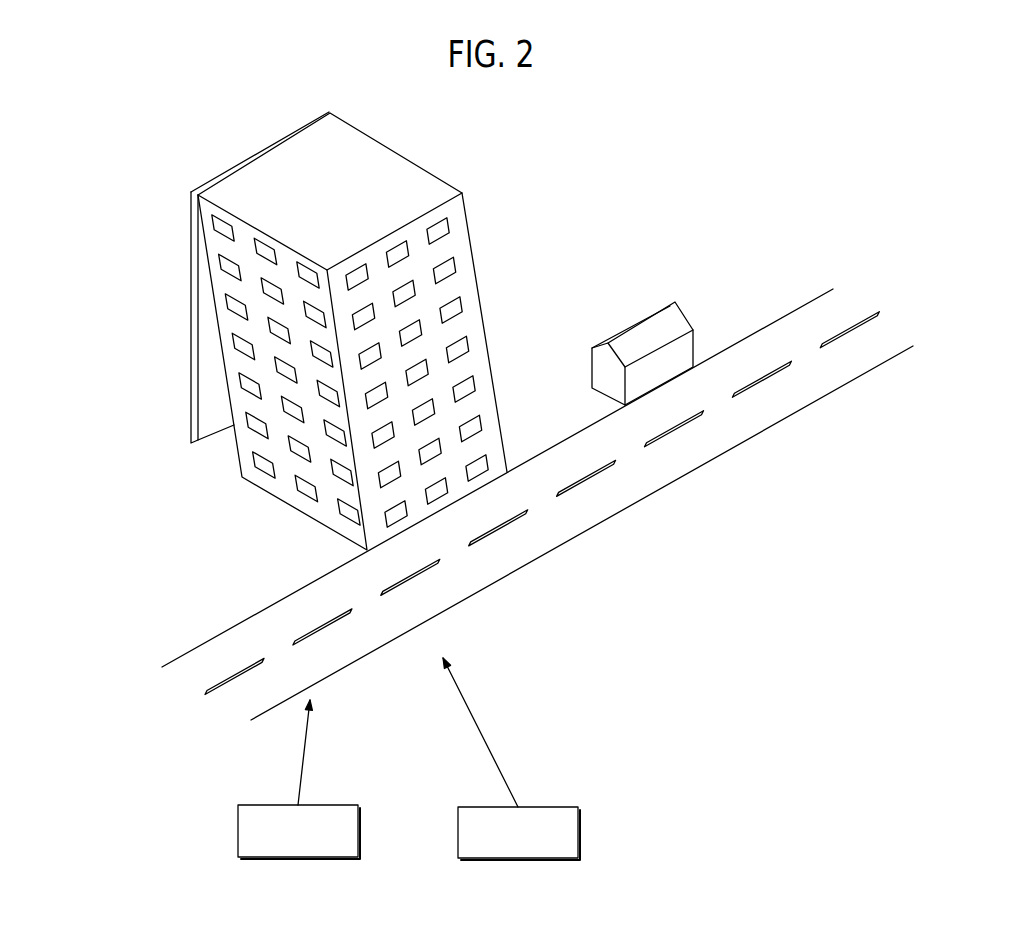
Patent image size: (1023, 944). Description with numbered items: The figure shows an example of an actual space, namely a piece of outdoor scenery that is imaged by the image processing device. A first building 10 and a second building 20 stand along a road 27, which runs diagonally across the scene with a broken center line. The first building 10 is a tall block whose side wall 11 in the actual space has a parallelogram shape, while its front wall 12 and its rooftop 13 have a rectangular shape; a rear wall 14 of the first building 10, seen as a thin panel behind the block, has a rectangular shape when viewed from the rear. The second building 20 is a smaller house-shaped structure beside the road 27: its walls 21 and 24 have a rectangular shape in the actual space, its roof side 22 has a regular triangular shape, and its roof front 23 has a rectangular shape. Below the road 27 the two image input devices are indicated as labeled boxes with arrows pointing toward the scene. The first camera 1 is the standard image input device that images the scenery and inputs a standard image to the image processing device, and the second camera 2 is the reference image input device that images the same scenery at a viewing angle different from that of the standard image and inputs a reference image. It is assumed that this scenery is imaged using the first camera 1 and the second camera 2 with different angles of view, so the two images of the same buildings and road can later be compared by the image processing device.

The first camera 1 is at (238, 837).
The second camera 2 is at (580, 840).
The first building 10 is at (332, 327).
The side wall 11 is at (322, 510).
The front wall 12 is at (468, 322).
The rooftop 13 is at (265, 187).
The rear wall 14 is at (190, 377).
The second building 20 is at (648, 304).
The wall 21 is at (607, 380).
The roof side 22 is at (605, 347).
The roof front 23 is at (677, 318).
The wall 24 is at (690, 352).
The road 27 is at (592, 500).